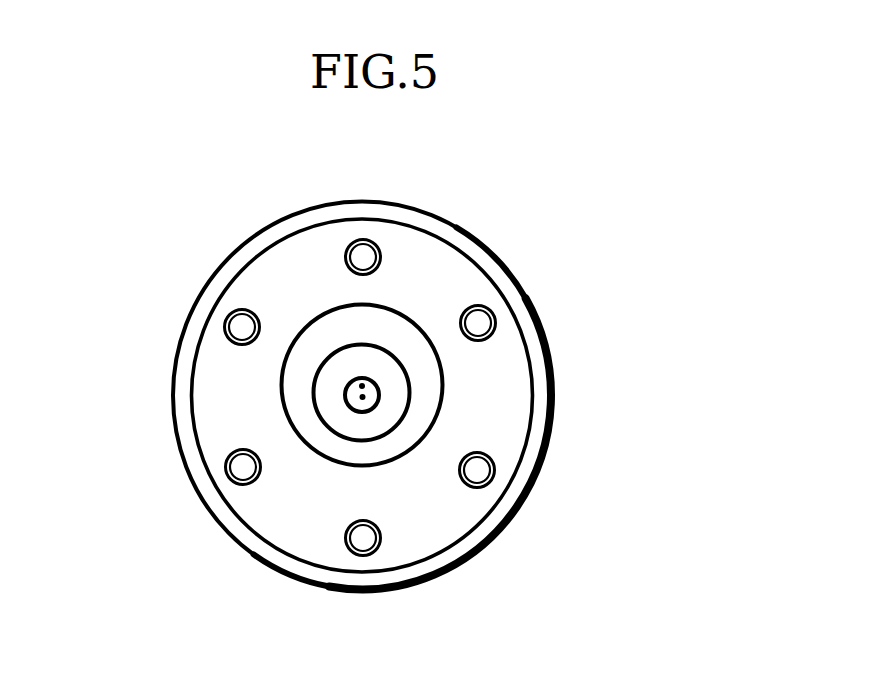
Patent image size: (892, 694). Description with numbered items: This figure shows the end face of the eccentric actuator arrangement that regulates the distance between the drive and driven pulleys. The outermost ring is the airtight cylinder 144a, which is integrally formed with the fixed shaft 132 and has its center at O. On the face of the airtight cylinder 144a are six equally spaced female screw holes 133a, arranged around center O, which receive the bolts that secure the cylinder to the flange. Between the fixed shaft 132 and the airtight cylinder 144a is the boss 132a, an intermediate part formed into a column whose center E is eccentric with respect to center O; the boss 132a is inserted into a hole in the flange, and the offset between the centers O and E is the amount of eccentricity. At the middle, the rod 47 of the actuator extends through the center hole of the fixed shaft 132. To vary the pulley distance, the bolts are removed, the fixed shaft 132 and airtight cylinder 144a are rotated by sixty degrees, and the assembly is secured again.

The airtight cylinder 144a is at (466, 243).
The female screw holes 133a is at (493, 315).
The boss 132a is at (307, 322).
The fixed shaft 132 is at (397, 397).
The rod 47 is at (364, 404).
The center of the airtight cylinder O is at (363, 397).
The center of the boss E is at (362, 386).